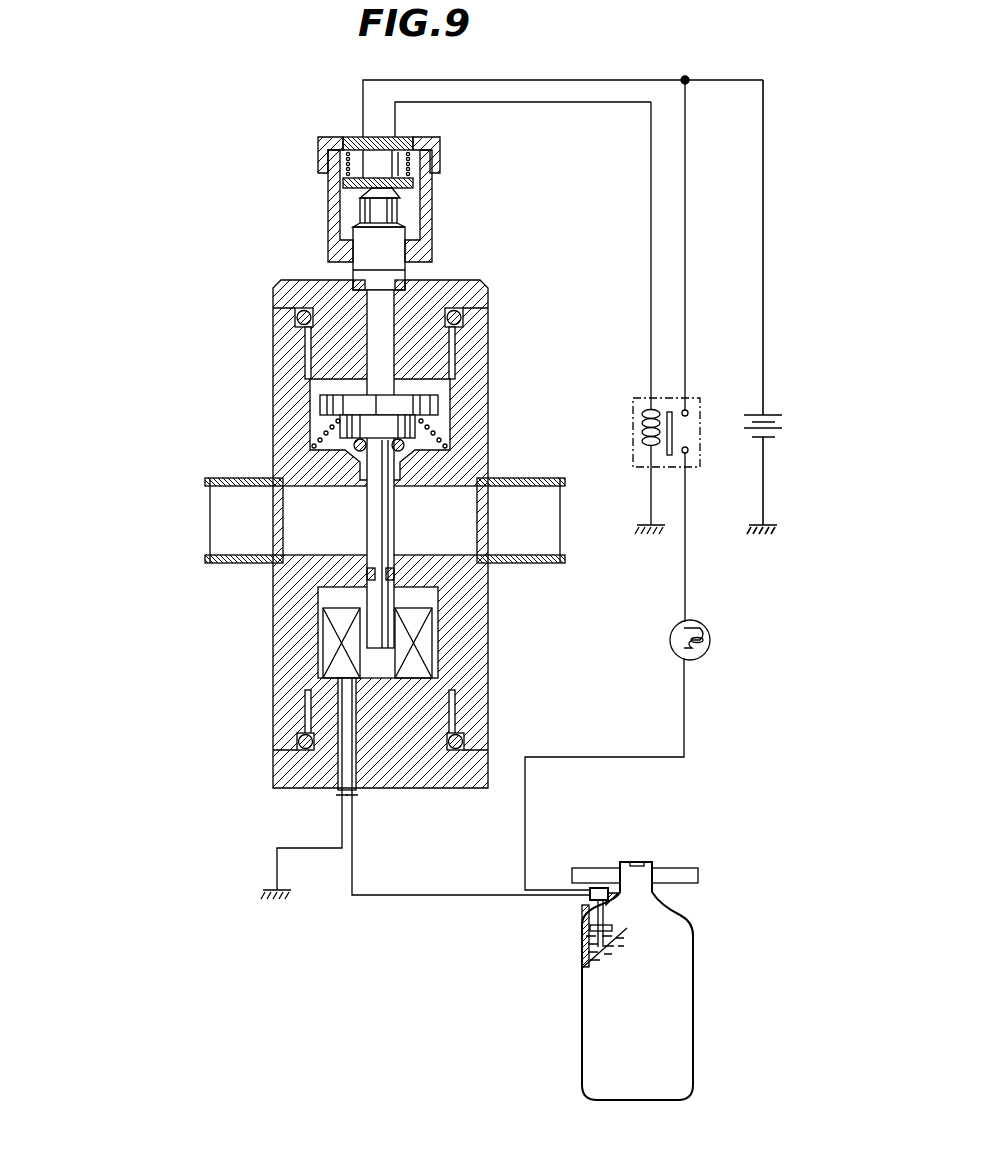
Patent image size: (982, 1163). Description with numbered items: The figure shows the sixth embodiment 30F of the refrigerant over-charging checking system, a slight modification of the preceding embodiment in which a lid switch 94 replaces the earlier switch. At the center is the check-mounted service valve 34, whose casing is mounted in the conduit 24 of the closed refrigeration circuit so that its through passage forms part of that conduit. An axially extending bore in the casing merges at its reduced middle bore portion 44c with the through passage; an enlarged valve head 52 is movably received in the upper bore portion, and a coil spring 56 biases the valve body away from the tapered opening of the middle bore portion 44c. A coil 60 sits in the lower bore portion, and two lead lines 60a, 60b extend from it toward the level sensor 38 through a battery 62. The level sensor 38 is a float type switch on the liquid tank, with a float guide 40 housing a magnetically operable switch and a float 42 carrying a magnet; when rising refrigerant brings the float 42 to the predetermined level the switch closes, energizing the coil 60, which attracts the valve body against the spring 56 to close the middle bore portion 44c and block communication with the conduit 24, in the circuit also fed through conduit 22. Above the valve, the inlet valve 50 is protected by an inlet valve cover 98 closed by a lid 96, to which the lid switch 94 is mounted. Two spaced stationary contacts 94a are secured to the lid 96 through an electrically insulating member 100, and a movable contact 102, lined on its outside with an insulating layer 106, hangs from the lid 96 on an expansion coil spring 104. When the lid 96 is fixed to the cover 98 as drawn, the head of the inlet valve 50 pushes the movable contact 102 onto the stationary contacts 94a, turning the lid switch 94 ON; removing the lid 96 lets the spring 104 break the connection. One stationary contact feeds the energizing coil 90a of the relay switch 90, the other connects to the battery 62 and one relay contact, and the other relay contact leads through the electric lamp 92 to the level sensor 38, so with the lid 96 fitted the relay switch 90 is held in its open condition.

The conduit 22 is at (677, 878).
The conduit 24 is at (261, 478).
The sixth embodiment 30F is at (766, 774).
The check-mounted service valve 34 is at (506, 434).
The level sensor 38 is at (597, 890).
The float guide 40 is at (604, 917).
The float 42 is at (608, 935).
The reduced middle bore portion 44c is at (378, 485).
The inlet valve 50 is at (397, 212).
The valve head 52 is at (437, 405).
The coil spring 56 is at (440, 433).
The coil 60 is at (427, 646).
The lead line 60a is at (418, 895).
The lead line 60b is at (315, 848).
The battery 62 is at (777, 423).
The relay switch 90 is at (639, 318).
The energizing coil 90a is at (642, 438).
The electric lamp 92 is at (708, 630).
The lid switch 94 is at (397, 169).
The stationary contacts 94a is at (358, 166).
The lid 96 is at (325, 137).
The inlet valve cover 98 is at (432, 240).
The electrically insulating member 100 is at (374, 137).
The movable contact 102 is at (368, 182).
The expansion coil spring 104 is at (400, 172).
The insulating layer 106 is at (370, 190).